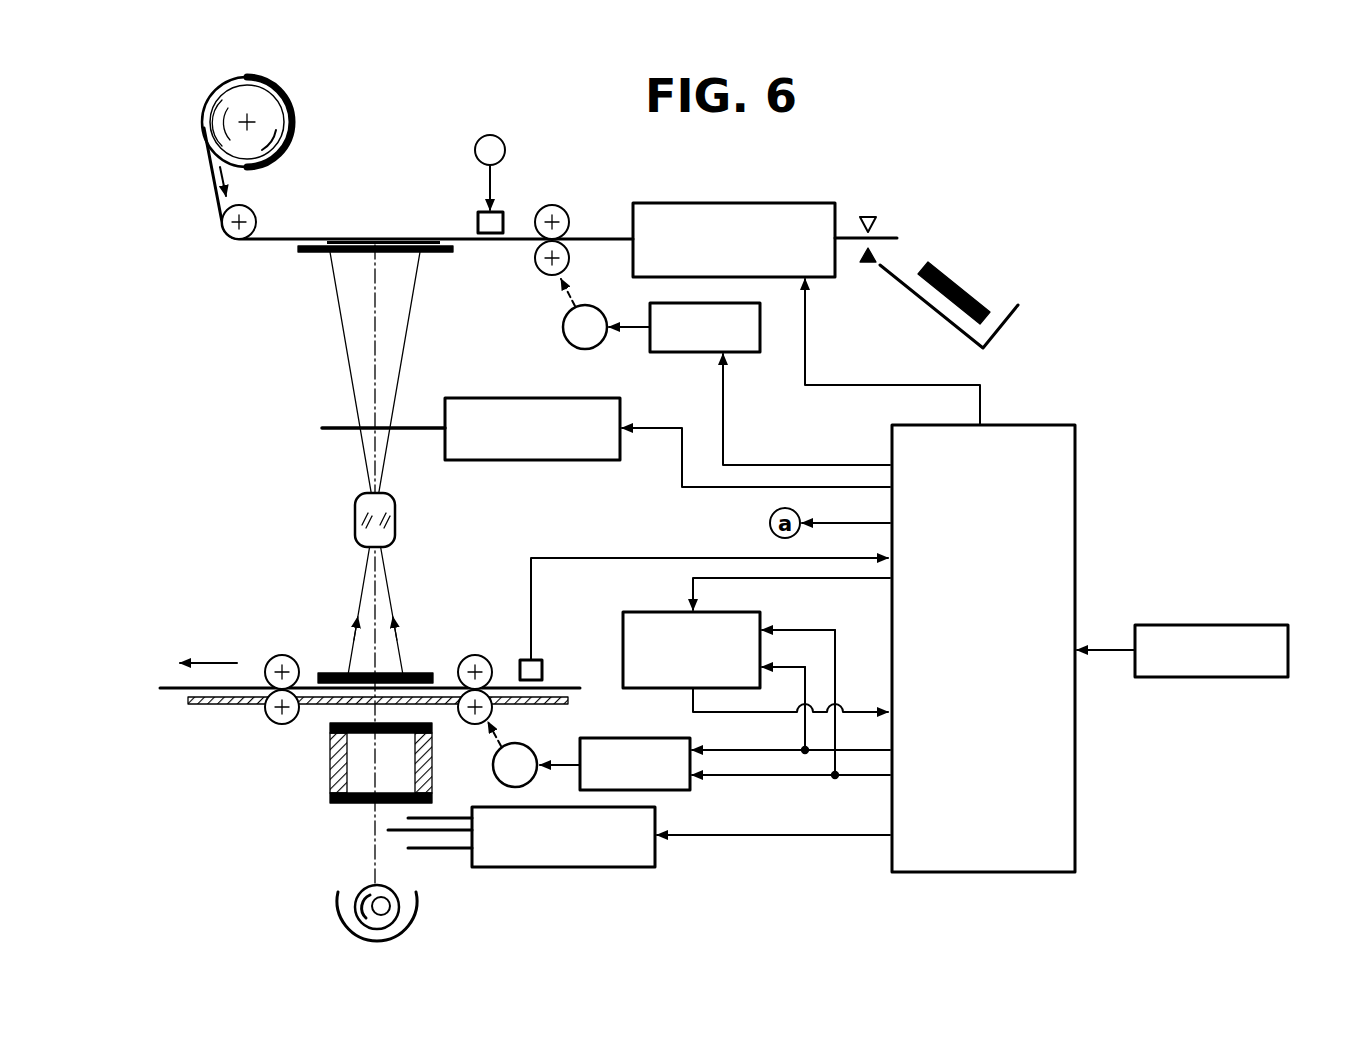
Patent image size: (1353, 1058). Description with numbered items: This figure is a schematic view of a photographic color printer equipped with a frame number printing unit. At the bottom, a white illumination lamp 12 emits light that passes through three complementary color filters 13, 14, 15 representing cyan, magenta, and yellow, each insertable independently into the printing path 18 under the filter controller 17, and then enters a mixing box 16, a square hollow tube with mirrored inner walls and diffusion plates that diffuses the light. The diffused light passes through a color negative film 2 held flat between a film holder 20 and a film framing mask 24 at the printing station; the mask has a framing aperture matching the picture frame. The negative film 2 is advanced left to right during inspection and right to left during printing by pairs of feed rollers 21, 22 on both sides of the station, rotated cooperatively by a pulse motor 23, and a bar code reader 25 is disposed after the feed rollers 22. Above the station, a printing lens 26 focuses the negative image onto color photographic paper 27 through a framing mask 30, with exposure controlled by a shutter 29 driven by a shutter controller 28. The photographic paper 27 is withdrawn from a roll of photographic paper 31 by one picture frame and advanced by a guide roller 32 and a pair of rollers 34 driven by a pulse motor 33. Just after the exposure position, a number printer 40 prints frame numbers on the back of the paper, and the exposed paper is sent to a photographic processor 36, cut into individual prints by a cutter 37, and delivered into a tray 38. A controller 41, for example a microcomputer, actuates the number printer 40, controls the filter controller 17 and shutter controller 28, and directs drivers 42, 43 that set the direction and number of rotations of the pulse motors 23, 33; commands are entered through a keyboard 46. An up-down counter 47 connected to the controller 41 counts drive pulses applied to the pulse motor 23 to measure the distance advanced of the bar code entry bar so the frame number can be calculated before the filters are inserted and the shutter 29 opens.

The color negative film 2 is at (163, 690).
The white illumination lamp 12 is at (355, 910).
The cyan color filter 13 is at (453, 852).
The magenta color filter 14 is at (398, 833).
The yellow color filter 15 is at (443, 817).
The mixing box 16 is at (330, 770).
The filter controller 17 is at (562, 867).
The printing path 18 is at (370, 575).
The film holder 20 is at (322, 705).
The feed rollers 21 is at (282, 655).
The feed rollers 22 is at (475, 655).
The pulse motor 23 is at (495, 763).
The film framing mask 24 is at (424, 673).
The bar code reader 25 is at (538, 658).
The printing lens 26 is at (395, 517).
The color photographic paper 27 is at (208, 177).
The shutter controller 28 is at (527, 460).
The shutter 29 is at (410, 428).
The framing mask 30 is at (310, 258).
The roll of photographic paper 31 is at (293, 122).
The guide roller 32 is at (254, 208).
The pulse motor 33 is at (575, 343).
The pair of rollers 34 is at (540, 270).
The photographic processor 36 is at (730, 203).
The cutter 37 is at (868, 215).
The tray 38 is at (1005, 325).
The number printer 40 is at (480, 212).
The controller 41 is at (1075, 522).
The driver 42 is at (633, 738).
The driver 43 is at (700, 352).
The keyboard 46 is at (1210, 677).
The up-down counter 47 is at (663, 612).